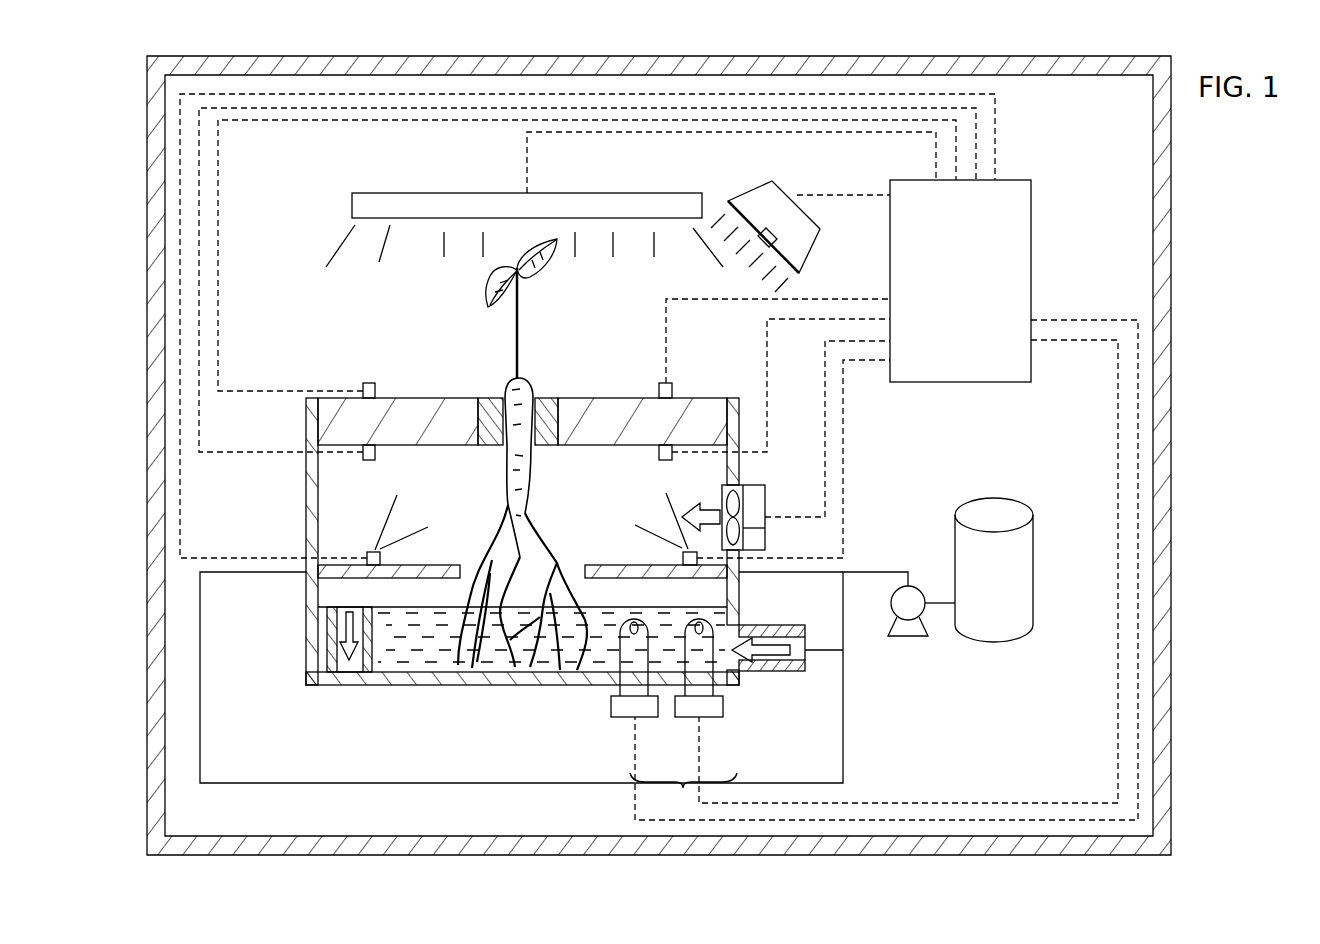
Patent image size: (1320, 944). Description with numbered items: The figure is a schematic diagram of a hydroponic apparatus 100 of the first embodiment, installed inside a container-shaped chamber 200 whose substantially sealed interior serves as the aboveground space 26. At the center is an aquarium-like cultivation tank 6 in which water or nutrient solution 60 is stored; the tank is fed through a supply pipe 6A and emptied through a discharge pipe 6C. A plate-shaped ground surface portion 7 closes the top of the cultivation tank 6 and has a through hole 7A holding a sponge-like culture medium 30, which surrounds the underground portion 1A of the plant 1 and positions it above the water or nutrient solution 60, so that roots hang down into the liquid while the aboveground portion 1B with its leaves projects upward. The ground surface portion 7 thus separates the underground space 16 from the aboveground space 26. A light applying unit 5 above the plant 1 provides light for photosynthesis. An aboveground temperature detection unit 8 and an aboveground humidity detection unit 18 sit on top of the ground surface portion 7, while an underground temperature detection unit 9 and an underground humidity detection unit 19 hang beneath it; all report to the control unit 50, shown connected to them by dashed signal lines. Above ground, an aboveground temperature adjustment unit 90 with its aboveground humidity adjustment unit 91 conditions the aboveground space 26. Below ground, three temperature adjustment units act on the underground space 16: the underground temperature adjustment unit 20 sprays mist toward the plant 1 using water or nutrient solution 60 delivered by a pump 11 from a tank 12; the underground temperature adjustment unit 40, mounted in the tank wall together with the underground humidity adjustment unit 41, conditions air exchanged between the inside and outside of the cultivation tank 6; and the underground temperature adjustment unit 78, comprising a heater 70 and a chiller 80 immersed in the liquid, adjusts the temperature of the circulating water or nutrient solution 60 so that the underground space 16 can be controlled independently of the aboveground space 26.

The chamber 200 is at (1172, 240).
The hydroponic apparatus 100 is at (313, 311).
The control unit 50 is at (1020, 240).
The light applying unit 5 is at (603, 200).
The aboveground temperature adjustment unit 90 is at (781, 216).
The aboveground humidity adjustment unit 91 is at (773, 236).
The aboveground space 26 is at (363, 305).
The plant 1 is at (495, 454).
The underground portion 1A is at (512, 476).
The aboveground portion 1B is at (490, 272).
The ground surface portion 7 is at (345, 408).
The through hole 7A is at (488, 410).
The culture medium 30 is at (547, 415).
The aboveground humidity detection unit 18 is at (368, 383).
The underground humidity detection unit 19 is at (369, 460).
The aboveground temperature detection unit 8 is at (666, 383).
The underground temperature detection unit 9 is at (656, 461).
The underground temperature adjustment unit 20 is at (367, 552).
The underground space 16 is at (332, 548).
The underground temperature adjustment unit 40 is at (765, 500).
The underground humidity adjustment unit 41 is at (757, 540).
The cultivation tank 6 is at (505, 686).
The discharge pipe 6C is at (345, 672).
The water or nutrient solution 60 is at (412, 640).
The supply pipe 6A is at (782, 662).
The heater 70 is at (654, 717).
The chiller 80 is at (718, 717).
The underground temperature adjustment unit 78 is at (683, 794).
The pump 11 is at (910, 637).
The tank 12 is at (1020, 582).